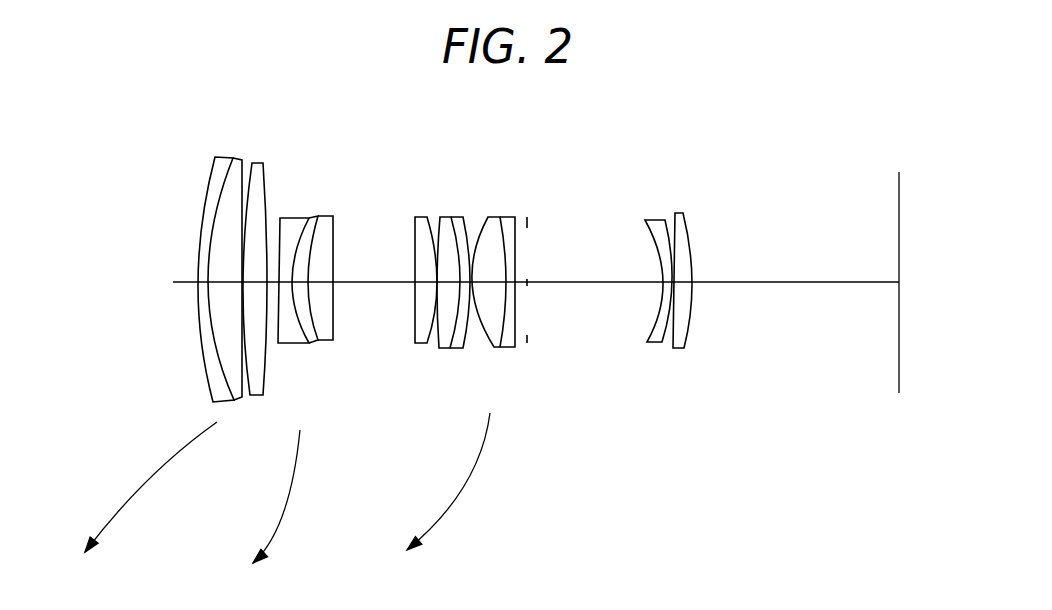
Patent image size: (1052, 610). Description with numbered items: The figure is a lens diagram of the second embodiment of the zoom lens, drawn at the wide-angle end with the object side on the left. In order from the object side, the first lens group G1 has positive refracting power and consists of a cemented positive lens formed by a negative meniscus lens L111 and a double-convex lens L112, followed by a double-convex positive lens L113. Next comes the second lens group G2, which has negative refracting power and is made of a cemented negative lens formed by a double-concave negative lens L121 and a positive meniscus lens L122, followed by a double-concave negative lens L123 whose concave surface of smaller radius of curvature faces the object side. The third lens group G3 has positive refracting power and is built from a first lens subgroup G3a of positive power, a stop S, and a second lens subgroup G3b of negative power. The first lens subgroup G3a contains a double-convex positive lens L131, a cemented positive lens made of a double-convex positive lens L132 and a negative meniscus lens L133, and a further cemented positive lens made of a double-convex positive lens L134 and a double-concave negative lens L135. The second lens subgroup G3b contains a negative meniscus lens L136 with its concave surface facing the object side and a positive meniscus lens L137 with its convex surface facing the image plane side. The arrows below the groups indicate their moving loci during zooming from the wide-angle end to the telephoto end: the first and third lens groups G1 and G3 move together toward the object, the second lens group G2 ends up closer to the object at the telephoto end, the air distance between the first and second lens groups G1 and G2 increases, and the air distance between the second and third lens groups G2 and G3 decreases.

The first lens group G1 is at (273, 150).
The second lens group G2 is at (339, 208).
The third lens group G3 is at (694, 150).
The first lens subgroup G3a is at (517, 208).
The second lens subgroup G3b is at (696, 208).
The negative meniscus lens L111 is at (212, 386).
The double-convex lens L112 is at (237, 401).
The double-convex positive lens L113 is at (263, 398).
The double-concave negative lens L121 is at (292, 345).
The positive meniscus lens L122 is at (315, 340).
The double-concave negative lens L123 is at (335, 338).
The double-convex positive lens L131 is at (417, 315).
The double-convex positive lens L132 is at (438, 341).
The negative meniscus lens L133 is at (455, 350).
The double-convex positive lens L134 is at (492, 348).
The double-concave negative lens L135 is at (511, 346).
The negative meniscus lens L136 is at (652, 343).
The positive meniscus lens L137 is at (681, 348).
The stop S is at (531, 224).